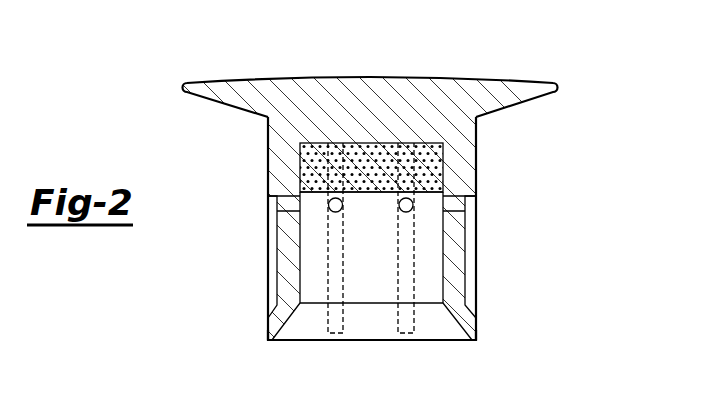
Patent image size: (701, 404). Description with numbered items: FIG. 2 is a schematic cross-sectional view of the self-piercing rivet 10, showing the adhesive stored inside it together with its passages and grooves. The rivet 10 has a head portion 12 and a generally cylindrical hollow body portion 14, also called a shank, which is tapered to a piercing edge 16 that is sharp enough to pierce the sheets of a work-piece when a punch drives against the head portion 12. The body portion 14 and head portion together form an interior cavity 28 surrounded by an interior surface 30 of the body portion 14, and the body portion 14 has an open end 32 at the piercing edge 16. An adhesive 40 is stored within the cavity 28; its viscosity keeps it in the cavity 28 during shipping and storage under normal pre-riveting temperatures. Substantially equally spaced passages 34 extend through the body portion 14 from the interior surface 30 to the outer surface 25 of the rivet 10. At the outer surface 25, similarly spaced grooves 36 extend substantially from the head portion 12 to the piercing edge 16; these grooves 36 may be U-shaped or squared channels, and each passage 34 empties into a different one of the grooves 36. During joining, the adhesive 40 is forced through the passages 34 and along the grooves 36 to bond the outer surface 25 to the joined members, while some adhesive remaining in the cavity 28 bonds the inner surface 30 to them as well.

The rivet 10 is at (383, 78).
The head portion 12 is at (470, 83).
The body portion 14 is at (478, 270).
The piercing edge 16 is at (266, 340).
The outer surface 25 is at (275, 258).
The interior cavity 28 is at (381, 282).
The interior surface 30 is at (302, 304).
The open end 32 is at (441, 342).
The passages 34 is at (291, 204).
The grooves 36 is at (268, 204).
The adhesive 40 is at (370, 184).